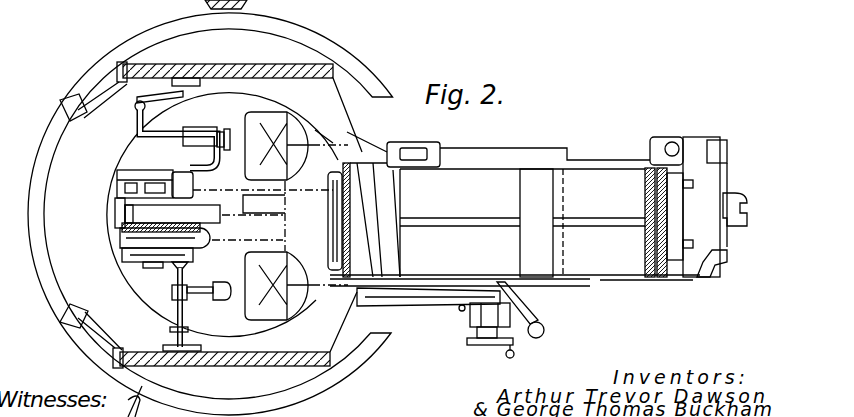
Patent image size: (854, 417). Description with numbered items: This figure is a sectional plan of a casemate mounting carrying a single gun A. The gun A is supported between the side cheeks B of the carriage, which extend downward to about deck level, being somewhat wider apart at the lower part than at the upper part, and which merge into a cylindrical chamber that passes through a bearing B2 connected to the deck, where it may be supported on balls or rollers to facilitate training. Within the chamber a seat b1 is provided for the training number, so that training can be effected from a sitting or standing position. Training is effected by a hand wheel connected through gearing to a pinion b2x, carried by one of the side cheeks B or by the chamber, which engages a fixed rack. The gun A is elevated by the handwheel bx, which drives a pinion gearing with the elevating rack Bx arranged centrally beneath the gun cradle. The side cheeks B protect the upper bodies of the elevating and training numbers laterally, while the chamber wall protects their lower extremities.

The gun A is at (531, 244).
The side cheeks of the carriage B is at (230, 53).
The seat b1 is at (287, 133).
The pinion b2x is at (125, 97).
The bearing B2 is at (133, 152).
The elevating rack Bx is at (137, 210).
The handwheel bx is at (180, 300).